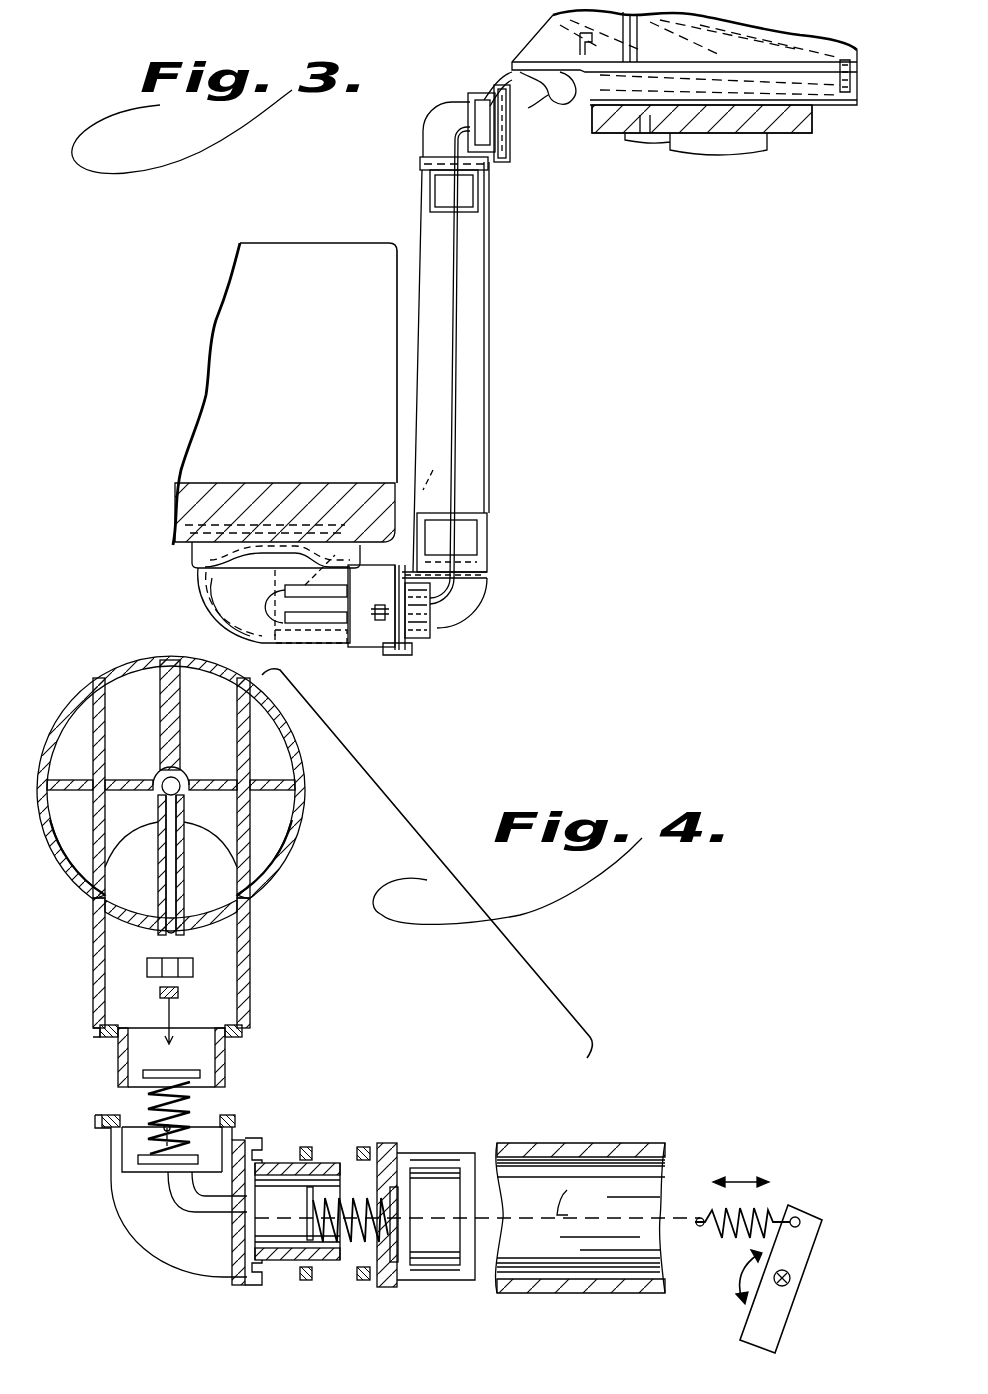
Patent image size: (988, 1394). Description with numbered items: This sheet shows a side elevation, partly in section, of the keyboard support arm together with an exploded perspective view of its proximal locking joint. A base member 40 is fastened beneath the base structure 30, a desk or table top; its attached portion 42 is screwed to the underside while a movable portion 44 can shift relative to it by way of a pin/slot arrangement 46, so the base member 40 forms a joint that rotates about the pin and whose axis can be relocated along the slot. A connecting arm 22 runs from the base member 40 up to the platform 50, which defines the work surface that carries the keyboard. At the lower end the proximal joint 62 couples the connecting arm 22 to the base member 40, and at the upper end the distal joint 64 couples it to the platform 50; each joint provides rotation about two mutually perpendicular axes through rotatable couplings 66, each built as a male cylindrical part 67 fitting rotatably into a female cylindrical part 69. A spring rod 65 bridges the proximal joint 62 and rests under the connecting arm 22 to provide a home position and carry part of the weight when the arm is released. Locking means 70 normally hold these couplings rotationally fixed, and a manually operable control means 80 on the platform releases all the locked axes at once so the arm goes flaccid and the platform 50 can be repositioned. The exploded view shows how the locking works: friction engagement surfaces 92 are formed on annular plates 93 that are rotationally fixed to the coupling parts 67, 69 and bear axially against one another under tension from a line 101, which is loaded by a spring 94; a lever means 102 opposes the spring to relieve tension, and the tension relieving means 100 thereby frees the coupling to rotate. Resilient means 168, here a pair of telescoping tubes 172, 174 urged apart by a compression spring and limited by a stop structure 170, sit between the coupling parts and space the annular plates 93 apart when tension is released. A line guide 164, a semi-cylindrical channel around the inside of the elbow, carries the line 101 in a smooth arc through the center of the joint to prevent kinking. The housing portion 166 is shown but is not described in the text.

In FIG. 3, the connecting arm 22 is at (486, 362).
In FIG. 4, the connecting arm 22 is at (568, 1148).
In FIG. 3, the base structure 30 is at (224, 322).
In FIG. 3, the base member 40 is at (190, 602).
In FIG. 4, the base member 40 is at (265, 872).
In FIG. 3, the attached portion 42 is at (192, 552).
In FIG. 3, the movable portion 44 is at (247, 625).
In FIG. 3, the pin/slot arrangement 46 is at (298, 555).
In FIG. 3, the platform 50 is at (665, 36).
In FIG. 3, the proximal joint 62 is at (468, 633).
In FIG. 4, the proximal joint 62 is at (310, 1080).
In FIG. 3, the distal joint 64 is at (491, 160).
In FIG. 3, the spring rod 65 is at (446, 460).
In FIG. 4, the rotatable coupling 66 is at (110, 1090).
In FIG. 3, the male cylindrical part 67 is at (468, 540).
In FIG. 4, the male cylindrical part 67 is at (226, 1066).
In FIG. 3, the female cylindrical part 69 is at (462, 514).
In FIG. 4, the female cylindrical part 69 is at (422, 1277).
In FIG. 3, the locking means 70 is at (515, 578).
In FIG. 3, the manually operable control means 80 is at (708, 158).
In FIG. 3, the engagement surfaces 92 is at (405, 600).
In FIG. 4, the engagement surfaces 92 is at (105, 1033).
In FIG. 4, the annular plates 93 is at (242, 1031).
In FIG. 4, the spring 94 is at (720, 1242).
In FIG. 4, the tension relieving means 100 is at (758, 1320).
In FIG. 4, the line 101 is at (173, 1009).
In FIG. 4, the lever means 102 is at (812, 1220).
In FIG. 4, the line guide 164 is at (198, 1210).
In FIG. 4, the column housing 166 is at (132, 992).
In FIG. 4, the resilient means 168 is at (195, 1100).
In FIG. 4, the stop structure 170 is at (328, 1192).
In FIG. 4, the telescoping tube 172 is at (396, 1212).
In FIG. 4, the mating telescoping tube 174 is at (308, 1225).